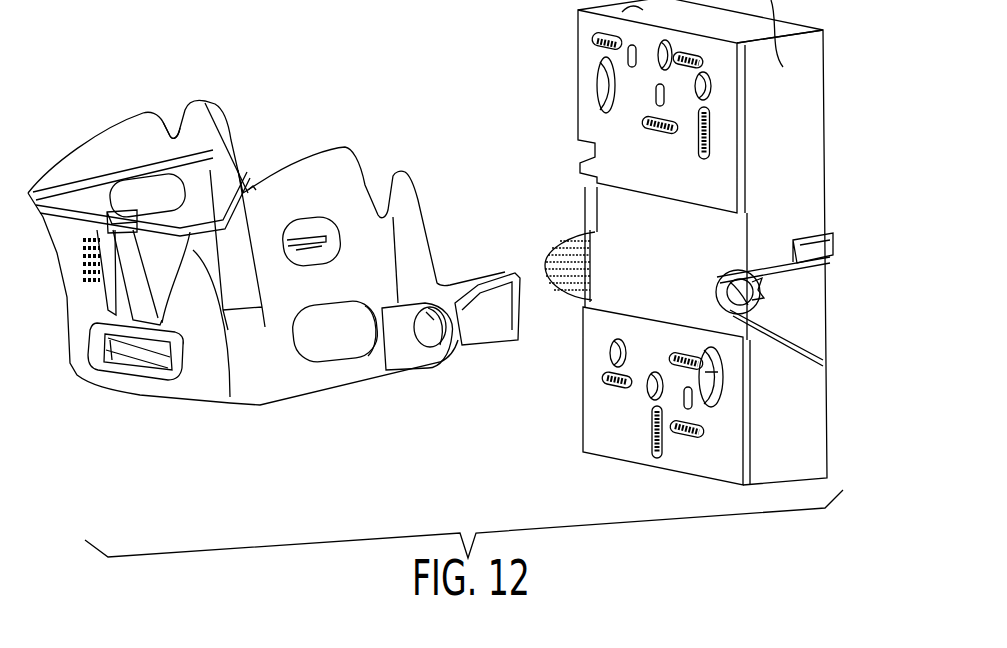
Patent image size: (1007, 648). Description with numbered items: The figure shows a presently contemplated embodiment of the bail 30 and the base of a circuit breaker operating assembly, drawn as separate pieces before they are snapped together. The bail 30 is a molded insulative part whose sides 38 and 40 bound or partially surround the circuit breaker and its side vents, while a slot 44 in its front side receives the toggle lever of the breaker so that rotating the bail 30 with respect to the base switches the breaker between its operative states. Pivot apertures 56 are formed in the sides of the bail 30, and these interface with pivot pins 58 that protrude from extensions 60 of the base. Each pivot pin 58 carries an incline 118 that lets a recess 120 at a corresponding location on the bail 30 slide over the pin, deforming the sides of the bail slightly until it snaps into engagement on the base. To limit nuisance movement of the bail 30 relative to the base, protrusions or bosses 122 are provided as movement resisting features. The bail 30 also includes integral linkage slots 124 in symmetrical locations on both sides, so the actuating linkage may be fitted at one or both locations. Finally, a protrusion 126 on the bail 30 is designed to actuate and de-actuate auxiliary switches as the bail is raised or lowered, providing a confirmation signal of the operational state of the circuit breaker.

The bail 30 is at (205, 378).
The side 40 is at (107, 147).
The integral linkage slots 124 is at (168, 128).
The protrusion 126 is at (110, 240).
The slot 44 is at (135, 362).
The side 38 is at (335, 297).
The pivot aperture 56 is at (432, 330).
The recess 120 is at (487, 315).
The extensions 60 is at (555, 242).
The protrusions or bosses 122 is at (803, 238).
The pivot pins 58 is at (745, 278).
The inclines 118 is at (722, 298).